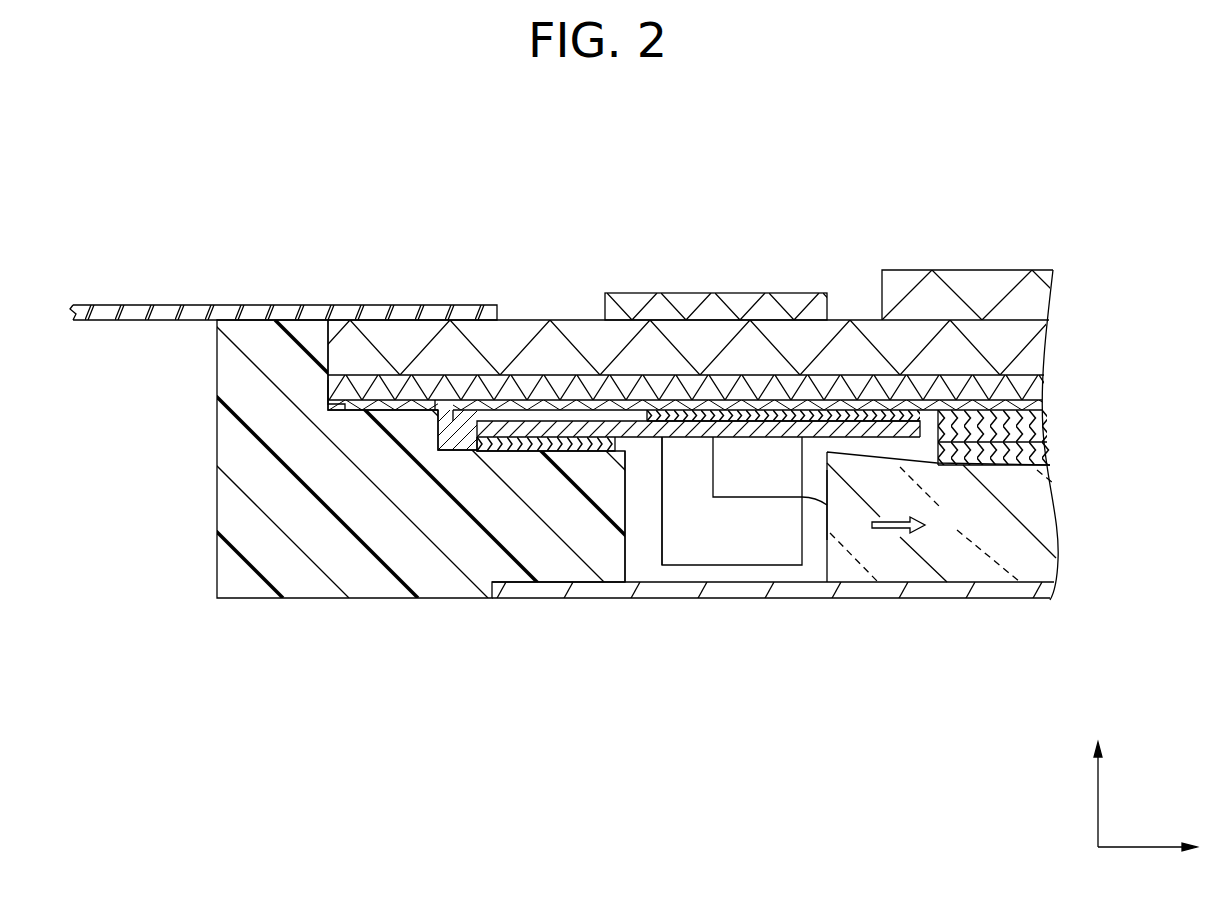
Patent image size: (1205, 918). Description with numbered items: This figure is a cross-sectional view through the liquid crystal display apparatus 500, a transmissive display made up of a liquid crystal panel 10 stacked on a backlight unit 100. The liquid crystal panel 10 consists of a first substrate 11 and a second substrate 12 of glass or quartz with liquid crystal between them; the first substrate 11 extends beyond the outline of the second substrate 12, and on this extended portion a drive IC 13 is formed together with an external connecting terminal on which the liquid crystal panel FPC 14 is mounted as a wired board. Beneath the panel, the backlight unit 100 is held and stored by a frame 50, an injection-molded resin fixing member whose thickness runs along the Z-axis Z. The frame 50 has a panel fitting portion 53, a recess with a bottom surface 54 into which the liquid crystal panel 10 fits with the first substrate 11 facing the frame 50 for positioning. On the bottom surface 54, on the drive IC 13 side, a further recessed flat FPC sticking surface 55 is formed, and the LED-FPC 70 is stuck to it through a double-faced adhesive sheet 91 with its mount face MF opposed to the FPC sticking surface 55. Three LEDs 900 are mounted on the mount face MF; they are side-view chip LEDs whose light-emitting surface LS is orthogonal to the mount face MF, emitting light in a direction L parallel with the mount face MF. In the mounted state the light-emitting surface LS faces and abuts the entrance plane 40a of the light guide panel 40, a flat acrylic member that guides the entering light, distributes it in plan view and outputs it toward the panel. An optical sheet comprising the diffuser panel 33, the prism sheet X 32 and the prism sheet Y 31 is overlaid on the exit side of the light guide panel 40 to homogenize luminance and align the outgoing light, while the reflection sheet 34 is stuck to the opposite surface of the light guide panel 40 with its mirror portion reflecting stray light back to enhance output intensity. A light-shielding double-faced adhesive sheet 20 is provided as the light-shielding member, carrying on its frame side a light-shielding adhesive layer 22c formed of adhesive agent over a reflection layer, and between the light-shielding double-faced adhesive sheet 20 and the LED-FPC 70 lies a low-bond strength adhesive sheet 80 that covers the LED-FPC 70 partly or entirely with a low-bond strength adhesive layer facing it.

The liquid crystal display apparatus 500 is at (360, 153).
The backlight unit 100 is at (580, 620).
The liquid crystal panel 10 is at (740, 263).
The first substrate 11 is at (1045, 350).
The second substrate 12 is at (1050, 286).
The drive IC 13 is at (651, 296).
The liquid crystal panel FPC 14 is at (108, 305).
The light-shielding double-faced adhesive sheet 20 is at (327, 395).
The light-shielding adhesive layer 22c is at (336, 410).
The prism sheet Y 31 is at (1043, 407).
The prism sheet X 32 is at (1046, 432).
The diffuser panel 33 is at (1050, 462).
The reflection sheet 34 is at (1052, 592).
The light guide panel 40 is at (1057, 533).
The entrance plane 40a is at (812, 560).
The frame 50 is at (240, 572).
The panel fitting portion 53 is at (331, 372).
The bottom surface 54 is at (401, 408).
The FPC sticking surface 55 is at (466, 448).
The LED-FPC 70 is at (573, 437).
The low-bond strength adhesive sheet 80 is at (860, 410).
The double-faced adhesive sheet 91 is at (483, 452).
The LED 900 is at (722, 566).
The mount face MF is at (636, 410).
The light-emitting surface LS is at (826, 498).
The outgoing direction of light L is at (911, 526).
The Z-axis Z is at (1144, 775).